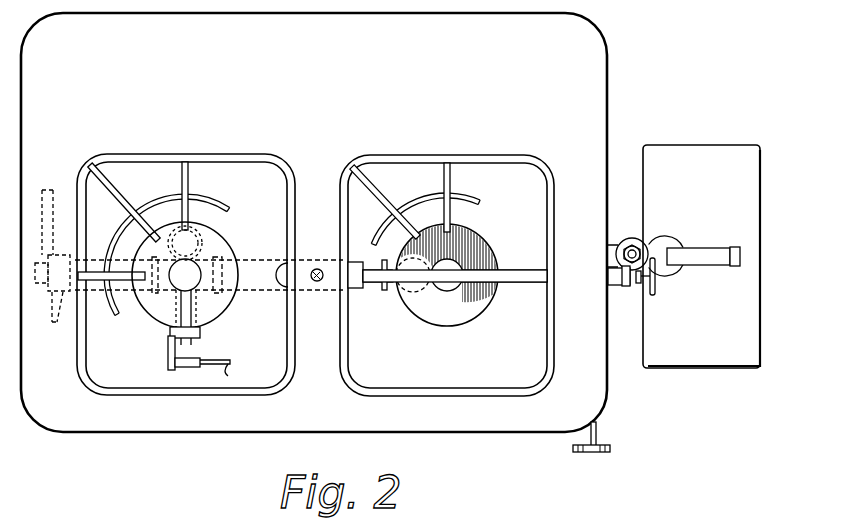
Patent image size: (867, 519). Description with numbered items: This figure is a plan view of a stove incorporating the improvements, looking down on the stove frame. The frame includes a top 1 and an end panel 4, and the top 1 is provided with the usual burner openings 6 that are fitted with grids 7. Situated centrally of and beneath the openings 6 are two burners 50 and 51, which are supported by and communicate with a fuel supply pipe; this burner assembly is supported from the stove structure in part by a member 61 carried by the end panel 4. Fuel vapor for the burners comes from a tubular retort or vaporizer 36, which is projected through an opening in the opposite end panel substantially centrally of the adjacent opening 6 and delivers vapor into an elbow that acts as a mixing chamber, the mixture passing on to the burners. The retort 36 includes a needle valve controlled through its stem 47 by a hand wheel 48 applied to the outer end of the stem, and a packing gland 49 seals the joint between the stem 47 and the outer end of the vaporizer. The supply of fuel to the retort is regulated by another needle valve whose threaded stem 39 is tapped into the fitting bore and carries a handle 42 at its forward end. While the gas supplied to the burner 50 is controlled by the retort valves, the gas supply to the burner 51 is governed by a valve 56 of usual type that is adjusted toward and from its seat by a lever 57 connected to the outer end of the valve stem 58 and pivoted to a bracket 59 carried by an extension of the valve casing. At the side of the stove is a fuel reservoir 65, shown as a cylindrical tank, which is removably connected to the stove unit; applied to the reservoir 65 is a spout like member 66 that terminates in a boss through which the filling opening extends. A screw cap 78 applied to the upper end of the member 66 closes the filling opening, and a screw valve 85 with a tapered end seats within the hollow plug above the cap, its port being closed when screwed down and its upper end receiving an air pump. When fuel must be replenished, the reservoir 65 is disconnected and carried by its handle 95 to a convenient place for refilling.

The top 1 is at (314, 222).
The end panel 4 is at (49, 253).
The burner openings 6 is at (277, 180).
The grids 7 is at (128, 160).
The retort or vaporizer 36 is at (520, 268).
The threaded stem 39 is at (596, 435).
The handle 42 is at (610, 448).
The valve stem 47 is at (638, 284).
The hand wheel 48 is at (660, 288).
The packing gland 49 is at (622, 288).
The burner 50 is at (480, 312).
The burner 51 is at (228, 247).
The valve 56 is at (173, 268).
The lever 57 is at (226, 373).
The valve stem 58 is at (200, 355).
The bracket 59 is at (167, 352).
The member 61 is at (60, 315).
The fuel reservoir 65 is at (701, 256).
The spout like member 66 is at (661, 250).
The screw cap 78 is at (628, 237).
The screw valve 85 is at (640, 245).
The handle 95 is at (713, 249).